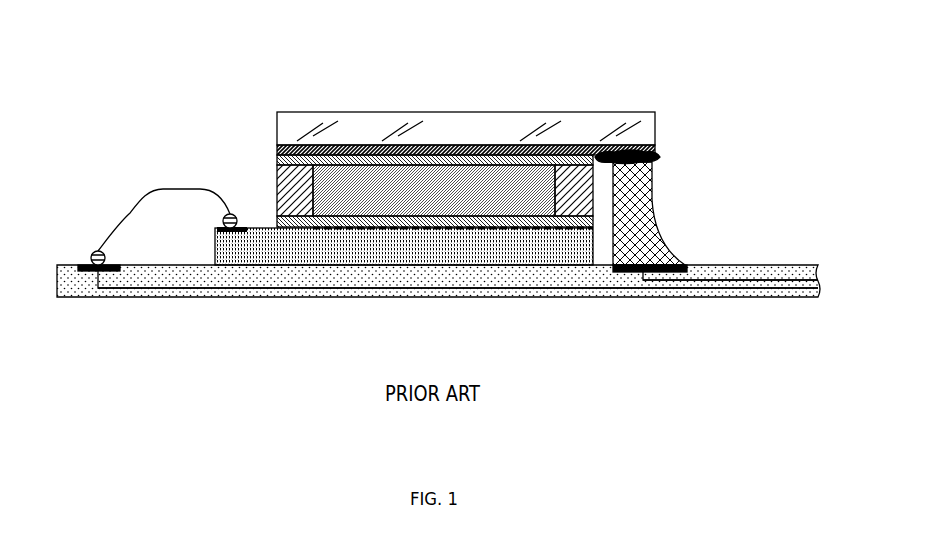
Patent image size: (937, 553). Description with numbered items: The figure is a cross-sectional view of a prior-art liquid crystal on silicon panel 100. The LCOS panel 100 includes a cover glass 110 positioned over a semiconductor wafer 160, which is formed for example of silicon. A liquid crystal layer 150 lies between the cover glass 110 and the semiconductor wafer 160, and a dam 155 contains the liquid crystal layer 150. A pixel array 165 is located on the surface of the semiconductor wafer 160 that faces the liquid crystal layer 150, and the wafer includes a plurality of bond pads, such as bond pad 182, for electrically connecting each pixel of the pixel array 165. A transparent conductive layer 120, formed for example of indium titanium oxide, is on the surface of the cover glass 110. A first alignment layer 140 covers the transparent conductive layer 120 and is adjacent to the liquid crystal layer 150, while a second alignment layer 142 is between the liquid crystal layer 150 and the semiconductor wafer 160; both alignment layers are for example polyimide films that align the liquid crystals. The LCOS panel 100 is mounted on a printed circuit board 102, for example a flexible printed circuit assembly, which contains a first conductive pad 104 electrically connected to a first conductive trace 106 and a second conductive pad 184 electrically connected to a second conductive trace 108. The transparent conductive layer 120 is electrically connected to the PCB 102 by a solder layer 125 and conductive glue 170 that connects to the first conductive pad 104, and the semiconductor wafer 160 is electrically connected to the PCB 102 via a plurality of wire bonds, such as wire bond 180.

The LCOS panel 100 is at (158, 45).
The printed circuit board 102 is at (66, 265).
The first conductive pad 104 is at (612, 266).
The first conductive trace 106 is at (788, 280).
The second conductive trace 108 is at (150, 297).
The cover glass 110 is at (480, 138).
The transparent conductive layer 120 is at (277, 152).
The solder layer 125 is at (660, 158).
The first alignment layer 140 is at (277, 162).
The second alignment layer 142 is at (277, 224).
The liquid crystal layer 150 is at (448, 201).
The dam 155 is at (277, 190).
The semiconductor wafer 160 is at (416, 258).
The pixel array 165 is at (483, 238).
The conductive glue 170 is at (653, 255).
The wire bond 180 is at (137, 209).
The bond pad 182 is at (234, 233).
The second conductive pad 184 is at (117, 264).